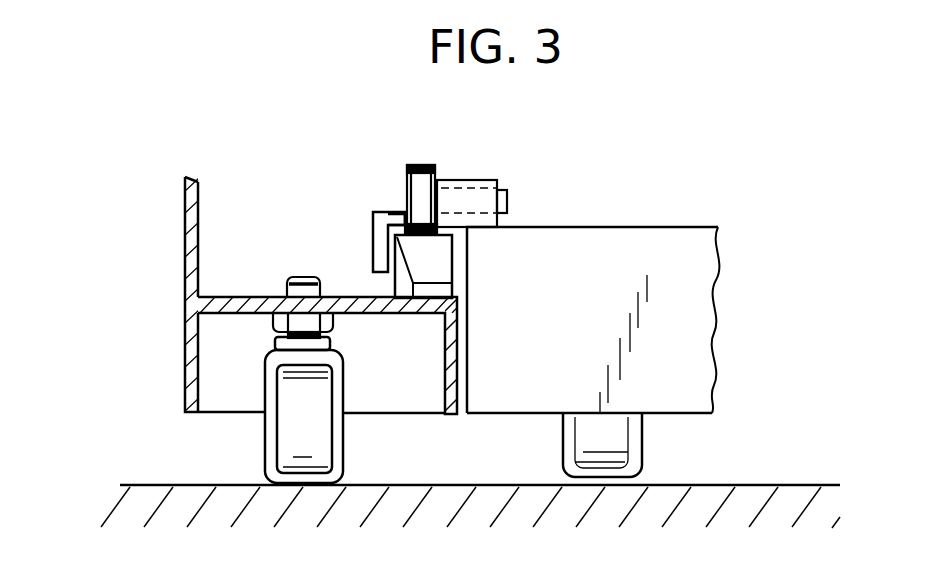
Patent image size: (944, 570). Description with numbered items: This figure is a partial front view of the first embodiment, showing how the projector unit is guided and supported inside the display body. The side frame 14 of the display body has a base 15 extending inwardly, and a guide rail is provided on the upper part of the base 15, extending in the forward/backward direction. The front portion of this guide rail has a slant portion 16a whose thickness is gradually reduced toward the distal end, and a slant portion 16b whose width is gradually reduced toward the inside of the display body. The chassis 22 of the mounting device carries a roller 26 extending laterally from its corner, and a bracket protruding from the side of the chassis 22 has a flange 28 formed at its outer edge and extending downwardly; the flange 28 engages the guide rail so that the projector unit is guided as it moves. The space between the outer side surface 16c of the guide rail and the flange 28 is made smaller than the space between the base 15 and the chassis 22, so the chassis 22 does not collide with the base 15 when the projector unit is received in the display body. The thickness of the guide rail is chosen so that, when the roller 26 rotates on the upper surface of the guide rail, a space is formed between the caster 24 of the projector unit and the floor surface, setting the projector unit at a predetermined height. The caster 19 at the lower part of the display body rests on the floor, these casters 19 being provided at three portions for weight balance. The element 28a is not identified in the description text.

The side frame 14 is at (190, 232).
The base 15 is at (233, 305).
The slant portion 16a is at (438, 265).
The slant portion 16b is at (403, 295).
The outer side surface 16c is at (385, 257).
The caster 19 is at (344, 441).
The chassis 22 is at (627, 227).
The caster 24 is at (642, 450).
The roller 26 is at (420, 165).
The flange 28 is at (375, 214).
The bracket arm 28a is at (395, 212).